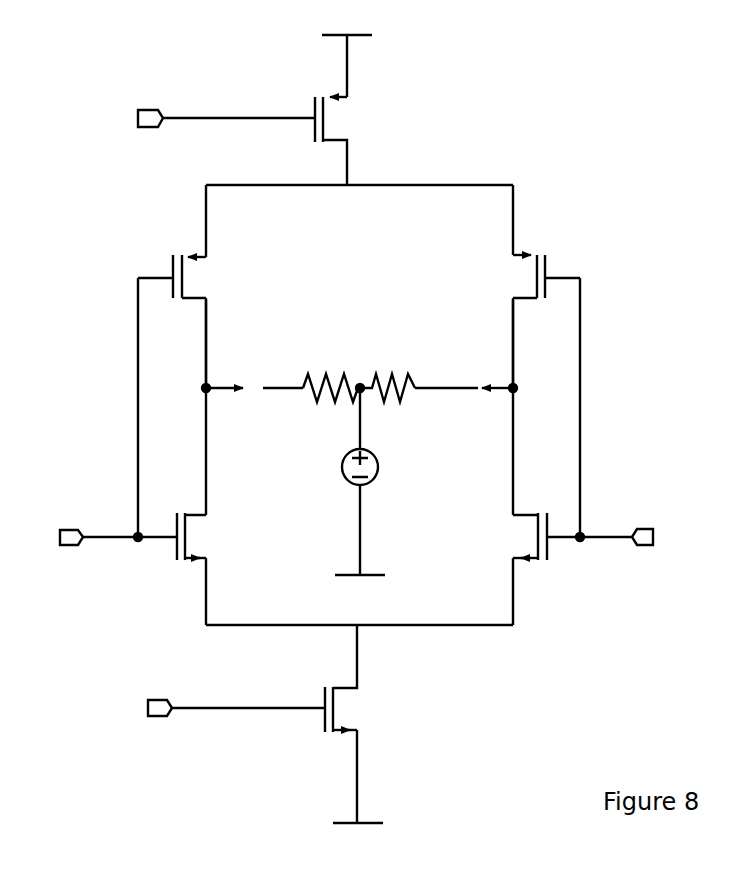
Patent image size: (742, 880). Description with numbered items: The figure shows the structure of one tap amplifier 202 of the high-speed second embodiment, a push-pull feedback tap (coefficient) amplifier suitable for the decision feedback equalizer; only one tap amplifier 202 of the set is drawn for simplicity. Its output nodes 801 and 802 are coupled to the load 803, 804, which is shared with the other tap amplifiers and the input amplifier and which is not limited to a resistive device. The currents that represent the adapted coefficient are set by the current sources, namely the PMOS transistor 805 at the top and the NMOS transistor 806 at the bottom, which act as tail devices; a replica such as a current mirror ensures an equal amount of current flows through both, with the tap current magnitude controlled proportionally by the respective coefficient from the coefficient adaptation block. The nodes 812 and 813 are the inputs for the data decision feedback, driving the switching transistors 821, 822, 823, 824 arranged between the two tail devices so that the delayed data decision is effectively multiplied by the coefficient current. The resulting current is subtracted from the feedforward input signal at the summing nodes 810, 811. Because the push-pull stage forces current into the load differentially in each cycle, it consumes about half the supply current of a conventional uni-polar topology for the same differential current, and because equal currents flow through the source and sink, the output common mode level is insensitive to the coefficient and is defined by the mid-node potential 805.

The tap amplifier 202 is at (604, 176).
The output node 801 is at (194, 343).
The output node 802 is at (499, 343).
The load 803 is at (331, 376).
The load 804 is at (387, 375).
The PMOS transistor (tail device) / mid-node potential 805 is at (263, 305).
The NMOS transistor (tail device) 806 is at (268, 724).
The summing node 810 is at (254, 375).
The summing node 811 is at (464, 375).
The input node for data decision feedback 812 is at (91, 530).
The input node for data decision feedback 813 is at (626, 526).
The first input transistor 821 is at (158, 536).
The first load transistor 822 is at (185, 276).
The second input transistor 823 is at (562, 536).
The second load transistor 824 is at (534, 276).